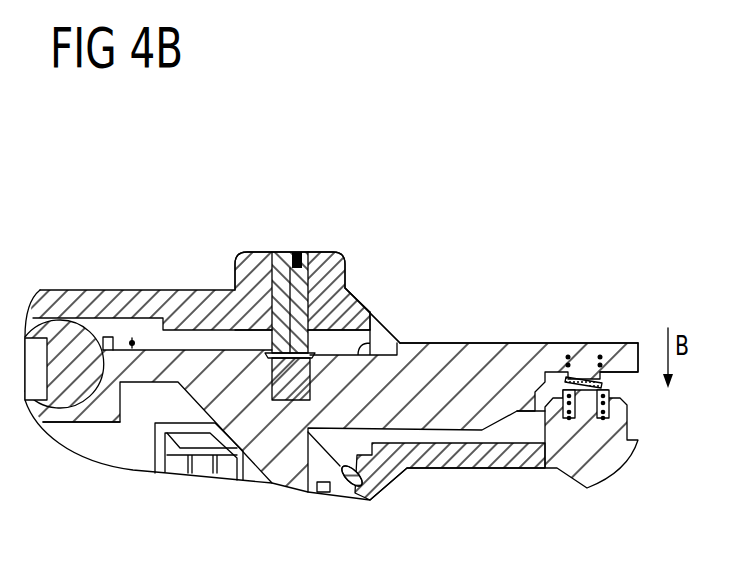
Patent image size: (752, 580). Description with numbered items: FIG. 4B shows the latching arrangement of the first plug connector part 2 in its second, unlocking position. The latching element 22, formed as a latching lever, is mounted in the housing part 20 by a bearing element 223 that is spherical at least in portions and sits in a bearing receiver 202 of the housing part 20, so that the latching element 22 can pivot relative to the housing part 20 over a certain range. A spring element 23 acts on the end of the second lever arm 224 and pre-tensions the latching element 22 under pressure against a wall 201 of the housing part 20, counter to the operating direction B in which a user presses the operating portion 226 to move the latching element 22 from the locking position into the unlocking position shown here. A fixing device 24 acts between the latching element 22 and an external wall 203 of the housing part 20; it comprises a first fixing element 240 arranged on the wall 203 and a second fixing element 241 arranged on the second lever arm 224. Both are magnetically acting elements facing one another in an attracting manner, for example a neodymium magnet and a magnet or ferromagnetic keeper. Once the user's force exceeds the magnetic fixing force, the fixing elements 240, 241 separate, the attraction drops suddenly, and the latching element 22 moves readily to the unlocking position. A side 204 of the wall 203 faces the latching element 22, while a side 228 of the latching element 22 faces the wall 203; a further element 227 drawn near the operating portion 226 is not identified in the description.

The first plug connector part 2 is at (236, 177).
The housing part 20 is at (176, 290).
The latching element 22 is at (131, 339).
The spring element 23 is at (603, 386).
The fixing device 24 is at (297, 268).
The wall 201 is at (490, 453).
The bearing receiver 202 is at (75, 400).
The external wall 203 is at (328, 268).
The side of the wall 204 is at (253, 337).
The bearing element 223 is at (77, 357).
The second lever arm 224 is at (197, 367).
The operating portion 226 is at (622, 346).
The latching elements 227 is at (587, 372).
The side of the latching element 228 is at (402, 329).
The first fixing element 240 is at (330, 274).
The second fixing element 241 is at (371, 313).